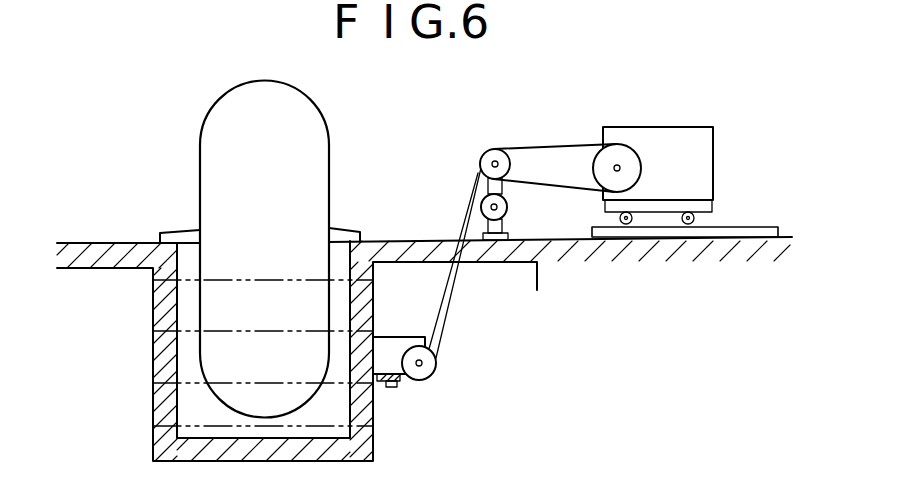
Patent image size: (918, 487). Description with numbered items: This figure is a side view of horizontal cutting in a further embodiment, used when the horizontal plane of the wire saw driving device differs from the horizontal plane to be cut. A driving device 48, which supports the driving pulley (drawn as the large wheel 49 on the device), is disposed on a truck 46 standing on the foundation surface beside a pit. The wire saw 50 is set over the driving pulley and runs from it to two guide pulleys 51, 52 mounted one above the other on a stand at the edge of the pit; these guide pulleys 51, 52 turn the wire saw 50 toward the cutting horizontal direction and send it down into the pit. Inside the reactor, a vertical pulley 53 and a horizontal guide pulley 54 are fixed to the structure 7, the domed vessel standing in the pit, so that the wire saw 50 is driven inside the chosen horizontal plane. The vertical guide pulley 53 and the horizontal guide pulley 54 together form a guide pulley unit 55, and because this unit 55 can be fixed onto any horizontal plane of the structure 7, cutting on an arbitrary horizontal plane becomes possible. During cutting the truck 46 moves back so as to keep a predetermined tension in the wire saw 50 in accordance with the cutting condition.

The structure 7 is at (351, 152).
The truck 46 is at (714, 197).
The driving device 48 is at (694, 136).
The drum 49 is at (629, 143).
The wire saw 50 is at (553, 146).
The guide pulley 51 is at (497, 148).
The guide pulley 52 is at (500, 207).
The vertical pulley 53 is at (452, 367).
The horizontal guide pulley 54 is at (416, 404).
The guide pulley unit 55 is at (412, 328).